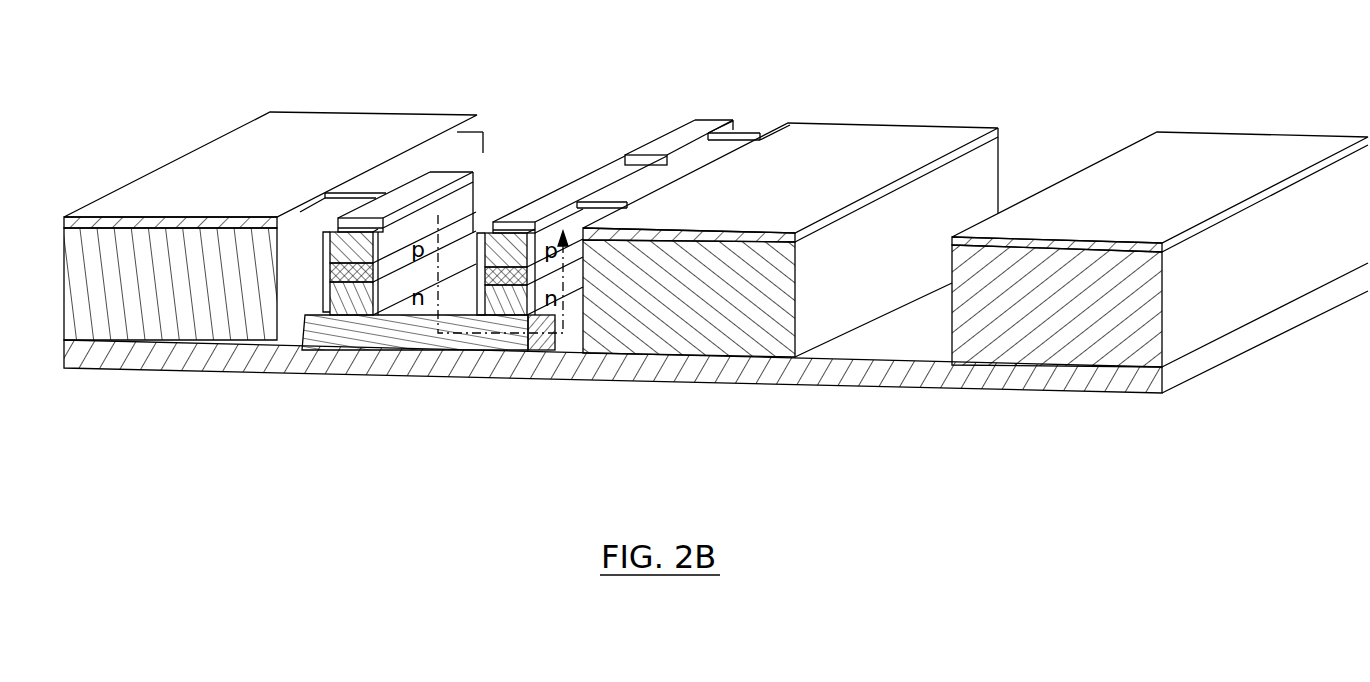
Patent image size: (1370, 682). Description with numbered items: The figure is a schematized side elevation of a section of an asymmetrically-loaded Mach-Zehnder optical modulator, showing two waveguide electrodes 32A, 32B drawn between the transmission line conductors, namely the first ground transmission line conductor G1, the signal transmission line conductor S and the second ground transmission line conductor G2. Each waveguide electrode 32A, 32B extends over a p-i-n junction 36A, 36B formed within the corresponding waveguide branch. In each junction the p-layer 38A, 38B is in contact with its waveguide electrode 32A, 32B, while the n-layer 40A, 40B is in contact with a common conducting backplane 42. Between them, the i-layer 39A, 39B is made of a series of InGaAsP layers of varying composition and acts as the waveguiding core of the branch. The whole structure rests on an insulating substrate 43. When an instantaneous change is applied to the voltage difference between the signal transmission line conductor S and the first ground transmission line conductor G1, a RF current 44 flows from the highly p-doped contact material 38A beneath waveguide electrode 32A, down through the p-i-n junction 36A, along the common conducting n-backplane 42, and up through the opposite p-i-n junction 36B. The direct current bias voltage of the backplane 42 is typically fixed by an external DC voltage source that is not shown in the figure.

The first ground transmission line conductor G1 is at (217, 160).
The second ground transmission line conductor G2 is at (1193, 145).
The signal transmission line conductor S is at (882, 142).
The waveguide electrode 32A is at (430, 185).
The waveguide electrode 32B is at (598, 187).
The p-layer 38A is at (463, 207).
The p-layer 38B is at (550, 233).
The i-layer 39A is at (343, 278).
The i-layer 39B is at (523, 267).
The n-layer 40A is at (350, 300).
The n-layer 40B is at (578, 279).
The p-i-n junction 36A is at (323, 280).
The p-i-n junction 36B is at (477, 277).
The common conducting backplane 42 is at (408, 328).
The insulating substrate 43 is at (466, 362).
The RF current 44 is at (522, 328).